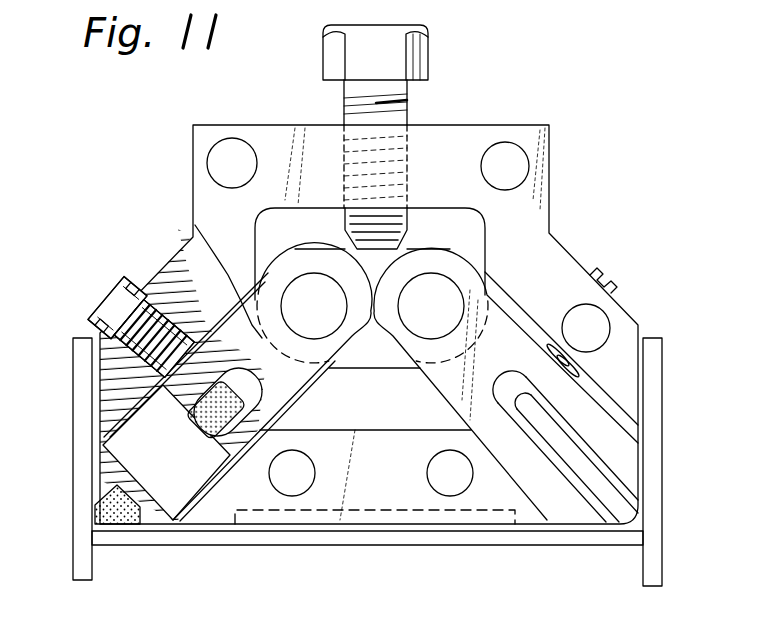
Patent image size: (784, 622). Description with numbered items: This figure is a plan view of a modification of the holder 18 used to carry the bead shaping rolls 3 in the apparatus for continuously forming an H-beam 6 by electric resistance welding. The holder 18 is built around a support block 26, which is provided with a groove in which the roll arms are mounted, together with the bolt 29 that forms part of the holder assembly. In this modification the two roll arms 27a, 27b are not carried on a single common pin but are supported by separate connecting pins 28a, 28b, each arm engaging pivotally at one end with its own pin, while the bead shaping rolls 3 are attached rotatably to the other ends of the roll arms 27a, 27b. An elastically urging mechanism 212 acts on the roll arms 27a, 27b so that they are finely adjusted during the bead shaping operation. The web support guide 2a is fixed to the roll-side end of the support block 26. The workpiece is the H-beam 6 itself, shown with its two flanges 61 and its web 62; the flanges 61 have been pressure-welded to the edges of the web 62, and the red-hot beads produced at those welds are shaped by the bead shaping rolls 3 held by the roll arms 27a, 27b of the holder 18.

The holder 18 is at (150, 152).
The bolt 29 is at (428, 66).
The support block 26 is at (549, 198).
The roll arm 27a is at (178, 236).
The roll arm 27b is at (510, 340).
The connecting pin 28a is at (312, 285).
The connecting pin 28b is at (440, 288).
The elastically urging mechanism 212 is at (96, 292).
The flange 61 is at (73, 489).
The H-beam 6 is at (72, 553).
The bead shaping roll 3 is at (120, 532).
The web 62 is at (282, 540).
The web support guide 2a is at (417, 533).